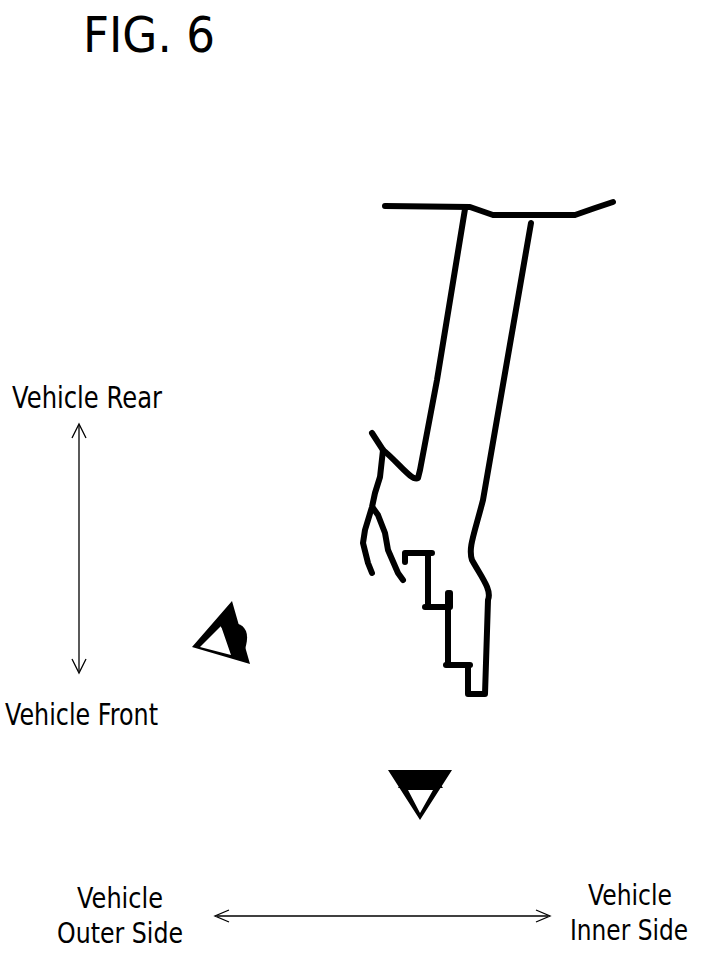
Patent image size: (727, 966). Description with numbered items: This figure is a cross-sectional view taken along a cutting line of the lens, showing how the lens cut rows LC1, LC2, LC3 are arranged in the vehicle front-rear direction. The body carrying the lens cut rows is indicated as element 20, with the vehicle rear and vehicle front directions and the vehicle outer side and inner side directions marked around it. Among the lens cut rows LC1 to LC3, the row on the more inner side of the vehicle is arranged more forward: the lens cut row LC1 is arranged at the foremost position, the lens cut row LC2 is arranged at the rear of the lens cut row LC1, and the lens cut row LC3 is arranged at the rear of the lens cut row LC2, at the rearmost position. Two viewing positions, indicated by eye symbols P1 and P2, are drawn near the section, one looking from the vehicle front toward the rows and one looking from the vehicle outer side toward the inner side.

The vehicle lamp / lens part 20 is at (444, 312).
The lens cut row LC1 is at (447, 688).
The lens cut row LC2 is at (432, 613).
The lens cut row LC3 is at (410, 572).
The first viewpoint P1 is at (405, 795).
The second viewpoint P2 is at (193, 647).